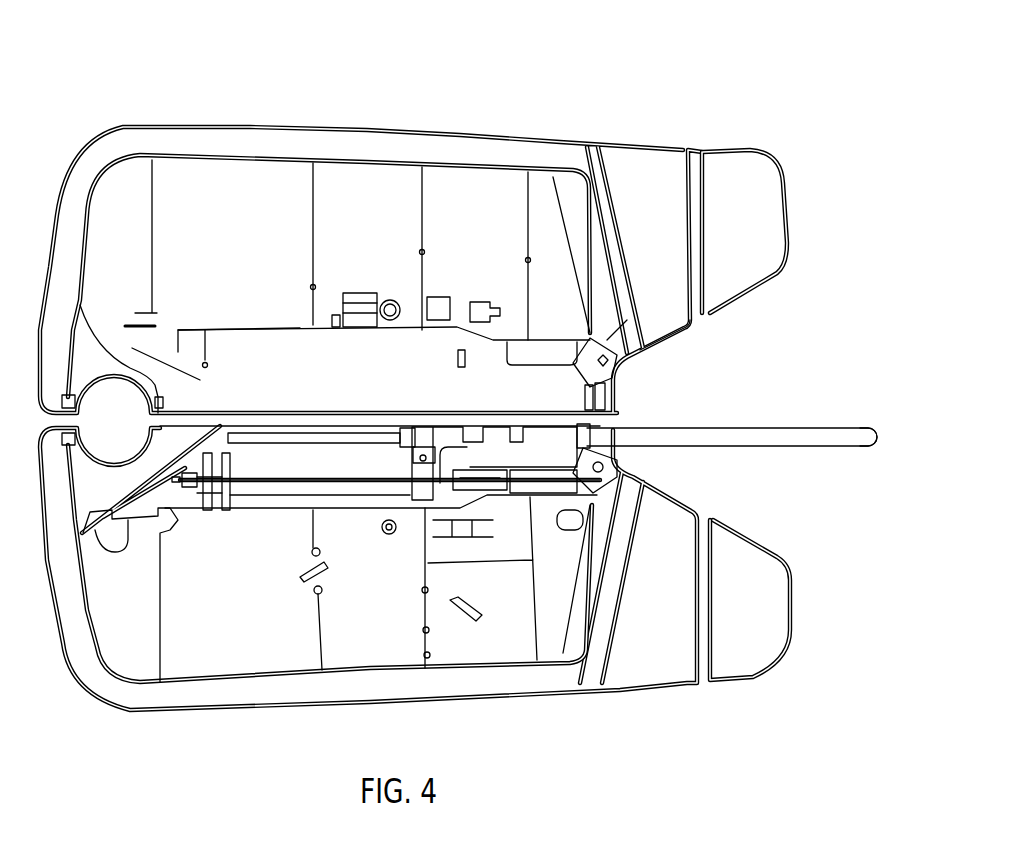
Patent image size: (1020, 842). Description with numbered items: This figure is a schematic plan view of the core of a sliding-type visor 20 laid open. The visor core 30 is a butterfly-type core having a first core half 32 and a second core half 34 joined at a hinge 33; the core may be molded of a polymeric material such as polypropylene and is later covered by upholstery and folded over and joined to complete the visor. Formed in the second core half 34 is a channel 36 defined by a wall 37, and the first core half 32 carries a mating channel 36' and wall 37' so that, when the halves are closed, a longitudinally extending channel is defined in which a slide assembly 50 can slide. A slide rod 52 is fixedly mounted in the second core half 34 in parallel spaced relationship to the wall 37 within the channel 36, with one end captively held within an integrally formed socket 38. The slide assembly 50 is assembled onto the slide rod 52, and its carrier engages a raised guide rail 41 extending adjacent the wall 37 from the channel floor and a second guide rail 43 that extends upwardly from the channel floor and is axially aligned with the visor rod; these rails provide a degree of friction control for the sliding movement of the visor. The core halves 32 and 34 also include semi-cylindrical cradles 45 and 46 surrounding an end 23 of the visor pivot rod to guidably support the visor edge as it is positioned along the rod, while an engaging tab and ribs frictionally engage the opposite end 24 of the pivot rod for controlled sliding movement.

The visor 20 is at (434, 90).
The visor core 30 is at (758, 183).
The first core half 32 is at (673, 320).
The hinge 33 is at (612, 410).
The second core half 34 is at (673, 513).
The end of visor pivot rod 23 is at (650, 432).
The end of visor pivot rod 24 is at (877, 428).
The channel 36 is at (320, 469).
The mating channel 36' is at (384, 356).
The wall 37 is at (336, 547).
The mating wall 37' is at (253, 351).
The socket 38 is at (193, 488).
The raised guide rail 41 is at (292, 507).
The second guide rail 43 is at (283, 437).
The semi-cylindrical cradle 45 is at (587, 400).
The semi-cylindrical cradle 46 is at (620, 453).
The slide assembly 50 is at (498, 426).
The slide rod 52 is at (265, 483).